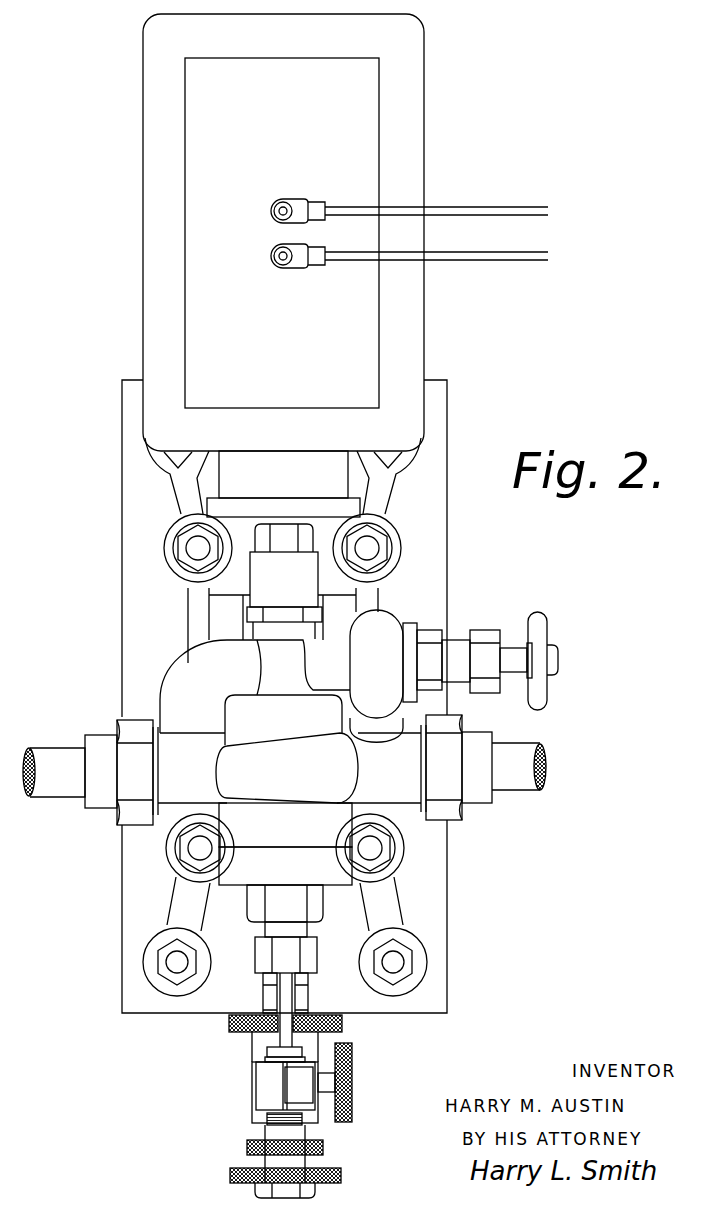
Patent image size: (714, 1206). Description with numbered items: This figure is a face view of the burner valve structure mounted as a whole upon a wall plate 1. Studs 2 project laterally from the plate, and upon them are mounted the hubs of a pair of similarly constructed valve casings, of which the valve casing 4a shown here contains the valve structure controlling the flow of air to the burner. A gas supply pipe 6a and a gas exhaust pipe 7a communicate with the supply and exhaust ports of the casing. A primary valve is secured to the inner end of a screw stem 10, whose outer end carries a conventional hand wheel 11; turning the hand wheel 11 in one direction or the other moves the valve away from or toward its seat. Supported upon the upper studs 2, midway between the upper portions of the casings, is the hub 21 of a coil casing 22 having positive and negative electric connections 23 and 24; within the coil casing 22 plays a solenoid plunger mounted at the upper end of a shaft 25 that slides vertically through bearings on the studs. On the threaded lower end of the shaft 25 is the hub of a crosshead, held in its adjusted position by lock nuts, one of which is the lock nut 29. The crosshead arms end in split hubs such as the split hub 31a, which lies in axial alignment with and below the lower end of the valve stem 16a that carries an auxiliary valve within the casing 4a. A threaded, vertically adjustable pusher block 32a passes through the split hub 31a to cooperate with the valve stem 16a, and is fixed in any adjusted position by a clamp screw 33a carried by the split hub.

The wall plate 1 is at (137, 640).
The studs 2 is at (196, 547).
The valve casing 4a is at (289, 747).
The gas supply pipe 6a is at (90, 772).
The gas exhaust pipe 7a is at (483, 767).
The screw stem 10 is at (511, 658).
The hand wheel 11 is at (540, 690).
The valve stem 16a is at (280, 995).
The hub 21 is at (283, 484).
The coil casing 22 is at (283, 232).
The positive electric connection 23 is at (270, 211).
The negative electric connection 24 is at (270, 256).
The shaft 25 is at (305, 995).
The lock nut 29 is at (345, 1175).
The split hub 31a is at (258, 1105).
The pusher block 32a is at (265, 1050).
The clamp screw 33a is at (355, 1080).